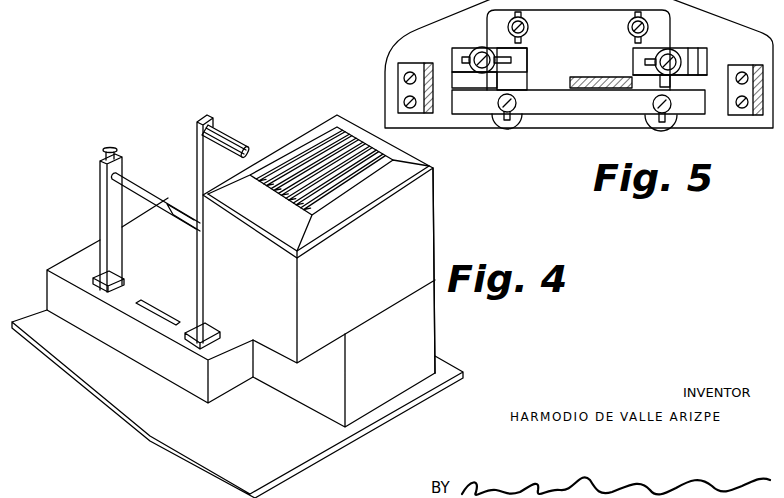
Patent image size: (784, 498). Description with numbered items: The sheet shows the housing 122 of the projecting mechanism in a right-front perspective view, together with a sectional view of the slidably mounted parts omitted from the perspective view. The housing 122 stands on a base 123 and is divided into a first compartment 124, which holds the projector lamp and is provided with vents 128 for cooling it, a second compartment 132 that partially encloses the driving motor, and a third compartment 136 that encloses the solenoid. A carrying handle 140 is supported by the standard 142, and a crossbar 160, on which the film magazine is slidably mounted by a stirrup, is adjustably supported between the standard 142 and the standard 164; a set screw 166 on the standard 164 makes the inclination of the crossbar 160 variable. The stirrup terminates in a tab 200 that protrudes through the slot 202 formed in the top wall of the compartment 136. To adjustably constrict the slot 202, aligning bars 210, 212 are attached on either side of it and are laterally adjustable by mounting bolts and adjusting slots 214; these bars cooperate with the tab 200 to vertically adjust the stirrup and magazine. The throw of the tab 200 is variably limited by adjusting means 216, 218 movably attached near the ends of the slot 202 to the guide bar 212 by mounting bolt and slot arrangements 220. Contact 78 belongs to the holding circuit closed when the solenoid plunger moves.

In FIG. 5, the contact 78 is at (358, 14).
In FIG. 4, the housing 122 is at (436, 227).
In FIG. 4, the base 123 is at (307, 452).
In FIG. 4, the first compartment 124 is at (420, 253).
In FIG. 4, the vents 128 is at (345, 146).
In FIG. 4, the second compartment 132 is at (420, 340).
In FIG. 4, the third compartment 136 is at (72, 265).
In FIG. 5, the third compartment 136 is at (403, 47).
In FIG. 4, the carrying handle 140 is at (208, 161).
In FIG. 4, the standard 142 is at (218, 151).
In FIG. 5, the standard 142 is at (759, 66).
In FIG. 4, the crossbar 160 is at (135, 185).
In FIG. 4, the standard 164 is at (108, 203).
In FIG. 5, the standard 164 is at (415, 115).
In FIG. 4, the set screw 166 is at (118, 158).
In FIG. 5, the tab 200 is at (632, 88).
In FIG. 4, the slot 202 is at (156, 306).
In FIG. 5, the slot 202 is at (490, 80).
In FIG. 5, the aligning bar 210 is at (598, 115).
In FIG. 5, the aligning bar 212 is at (612, 43).
In FIG. 5, the mounting bolts and adjusting slots 214 is at (627, 23).
In FIG. 5, the adjusting means 216 is at (520, 73).
In FIG. 5, the adjusting means 218 is at (648, 84).
In FIG. 5, the mounting bolt and slot arrangements 220 is at (483, 49).